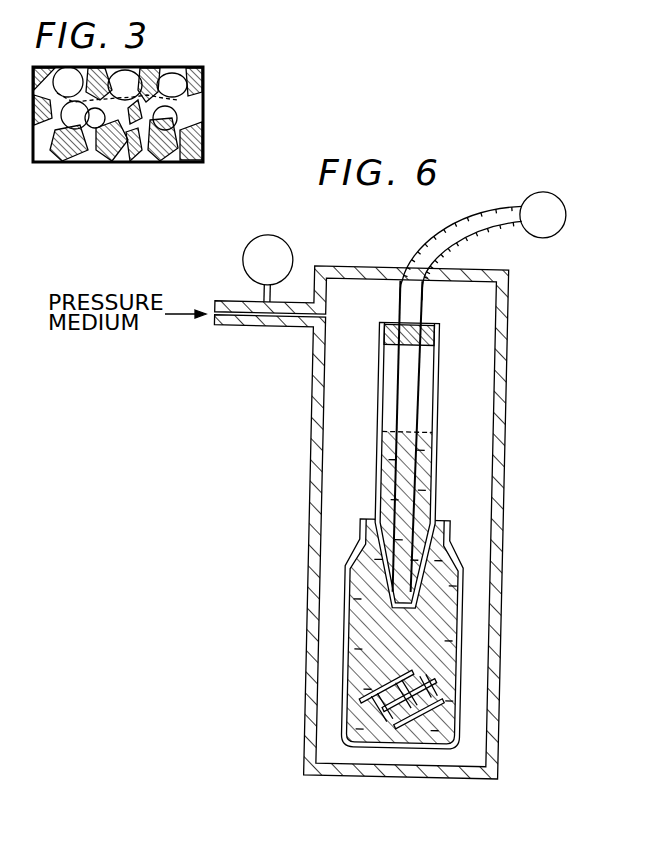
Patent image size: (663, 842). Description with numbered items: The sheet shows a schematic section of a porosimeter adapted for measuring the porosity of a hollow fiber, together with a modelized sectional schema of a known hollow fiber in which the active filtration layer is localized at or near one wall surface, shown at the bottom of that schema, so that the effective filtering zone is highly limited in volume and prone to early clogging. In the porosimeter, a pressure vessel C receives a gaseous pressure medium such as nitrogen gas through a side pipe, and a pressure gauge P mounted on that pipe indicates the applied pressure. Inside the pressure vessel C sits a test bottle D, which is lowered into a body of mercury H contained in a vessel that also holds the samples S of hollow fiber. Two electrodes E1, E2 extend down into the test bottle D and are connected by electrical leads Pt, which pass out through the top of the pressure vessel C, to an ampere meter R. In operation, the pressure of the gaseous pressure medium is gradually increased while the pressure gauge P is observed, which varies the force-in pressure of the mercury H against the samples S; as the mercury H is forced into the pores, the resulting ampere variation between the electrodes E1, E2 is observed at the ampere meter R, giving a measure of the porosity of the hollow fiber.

The pressure gauge P is at (267, 268).
The ampere meter R is at (542, 214).
The electrical leads Pt is at (477, 213).
The electrode E1 is at (398, 369).
The electrode E2 is at (420, 405).
The test bottle D is at (441, 388).
The mercury H is at (470, 606).
The samples S is at (443, 692).
The pressure vessel C is at (497, 740).